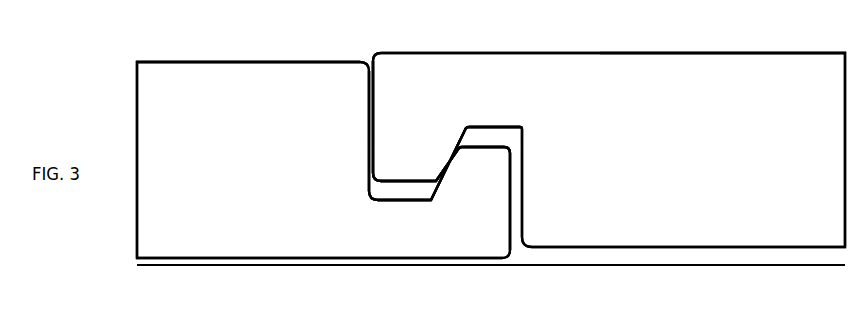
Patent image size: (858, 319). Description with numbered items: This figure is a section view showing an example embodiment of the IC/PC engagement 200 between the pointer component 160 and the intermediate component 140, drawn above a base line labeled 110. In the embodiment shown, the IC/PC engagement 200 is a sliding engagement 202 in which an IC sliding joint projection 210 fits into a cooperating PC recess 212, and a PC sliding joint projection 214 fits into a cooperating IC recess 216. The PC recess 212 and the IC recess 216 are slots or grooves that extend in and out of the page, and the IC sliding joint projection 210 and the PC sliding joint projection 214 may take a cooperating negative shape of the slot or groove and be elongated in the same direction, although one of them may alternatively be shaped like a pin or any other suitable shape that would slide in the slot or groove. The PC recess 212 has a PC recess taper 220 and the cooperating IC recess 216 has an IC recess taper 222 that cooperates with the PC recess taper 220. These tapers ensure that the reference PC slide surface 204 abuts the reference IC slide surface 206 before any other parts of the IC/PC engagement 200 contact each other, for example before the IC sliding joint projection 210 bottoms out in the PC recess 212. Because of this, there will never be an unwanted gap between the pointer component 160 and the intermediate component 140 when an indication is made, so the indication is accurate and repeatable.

The substrate 110 is at (470, 268).
The intermediate component 140 is at (770, 91).
The pointer component 160 is at (183, 101).
The IC/PC engagement 200 is at (437, 43).
The sliding engagement 202 is at (439, 40).
The reference PC slide surface 204 is at (370, 87).
The reference IC slide surface 206 is at (373, 95).
The IC sliding joint projection 210 is at (416, 163).
The PC recess 212 is at (382, 192).
The PC sliding joint projection 214 is at (493, 171).
The IC recess 216 is at (502, 133).
The PC recess taper 220 is at (448, 177).
The IC recess taper 222 is at (453, 147).